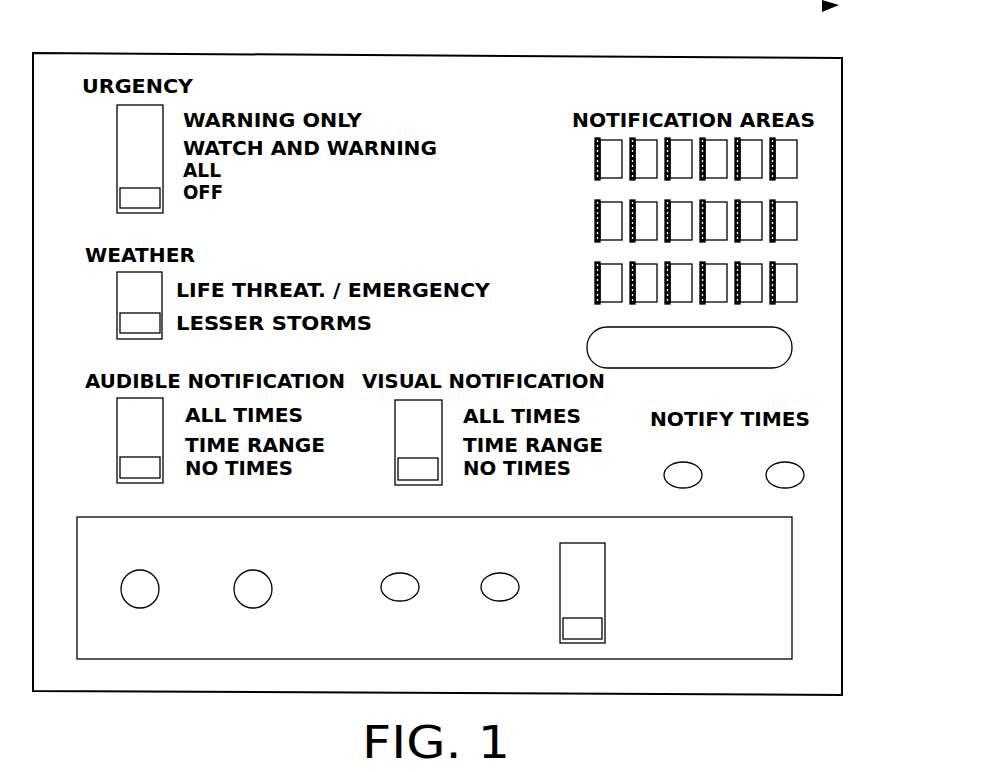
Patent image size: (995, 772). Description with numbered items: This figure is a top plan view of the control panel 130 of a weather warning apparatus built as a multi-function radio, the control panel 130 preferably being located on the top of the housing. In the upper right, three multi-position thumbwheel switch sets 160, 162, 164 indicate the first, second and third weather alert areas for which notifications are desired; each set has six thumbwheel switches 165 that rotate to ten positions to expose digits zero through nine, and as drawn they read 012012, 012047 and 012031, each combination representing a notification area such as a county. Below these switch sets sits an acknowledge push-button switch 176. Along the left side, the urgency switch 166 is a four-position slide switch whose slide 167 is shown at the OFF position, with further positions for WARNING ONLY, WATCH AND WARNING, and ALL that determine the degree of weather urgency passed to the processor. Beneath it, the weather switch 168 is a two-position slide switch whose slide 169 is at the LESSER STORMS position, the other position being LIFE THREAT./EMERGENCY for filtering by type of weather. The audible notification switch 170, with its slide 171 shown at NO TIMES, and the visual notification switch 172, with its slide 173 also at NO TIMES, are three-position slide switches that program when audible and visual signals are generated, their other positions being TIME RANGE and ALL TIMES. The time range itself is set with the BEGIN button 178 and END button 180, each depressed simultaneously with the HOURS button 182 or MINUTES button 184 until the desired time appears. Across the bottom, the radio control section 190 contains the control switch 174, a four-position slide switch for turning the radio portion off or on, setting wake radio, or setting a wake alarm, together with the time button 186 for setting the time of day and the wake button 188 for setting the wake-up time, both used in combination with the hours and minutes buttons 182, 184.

The control panel 130 is at (439, 101).
The thumbwheel switch set 160 is at (585, 142).
The thumbwheel switch set 162 is at (585, 202).
The thumbwheel switch set 164 is at (585, 263).
The thumbwheel switches 165 is at (797, 162).
The urgency switch 166 is at (104, 153).
The slide 167 is at (120, 200).
The weather switch 168 is at (105, 290).
The slide 169 is at (120, 325).
The audible notification switch 170 is at (104, 432).
The slide 171 is at (120, 467).
The visual notification switch 172 is at (385, 443).
The slide 173 is at (398, 468).
The control switch 174 is at (560, 543).
The push-button switch 176 is at (792, 347).
The BEGIN button 178 is at (683, 489).
The END button 180 is at (785, 489).
The HOURS button 182 is at (140, 608).
The MINUTES button 184 is at (253, 608).
The time button 186 is at (400, 601).
The wake button 188 is at (500, 601).
The radio control section 190 is at (193, 670).